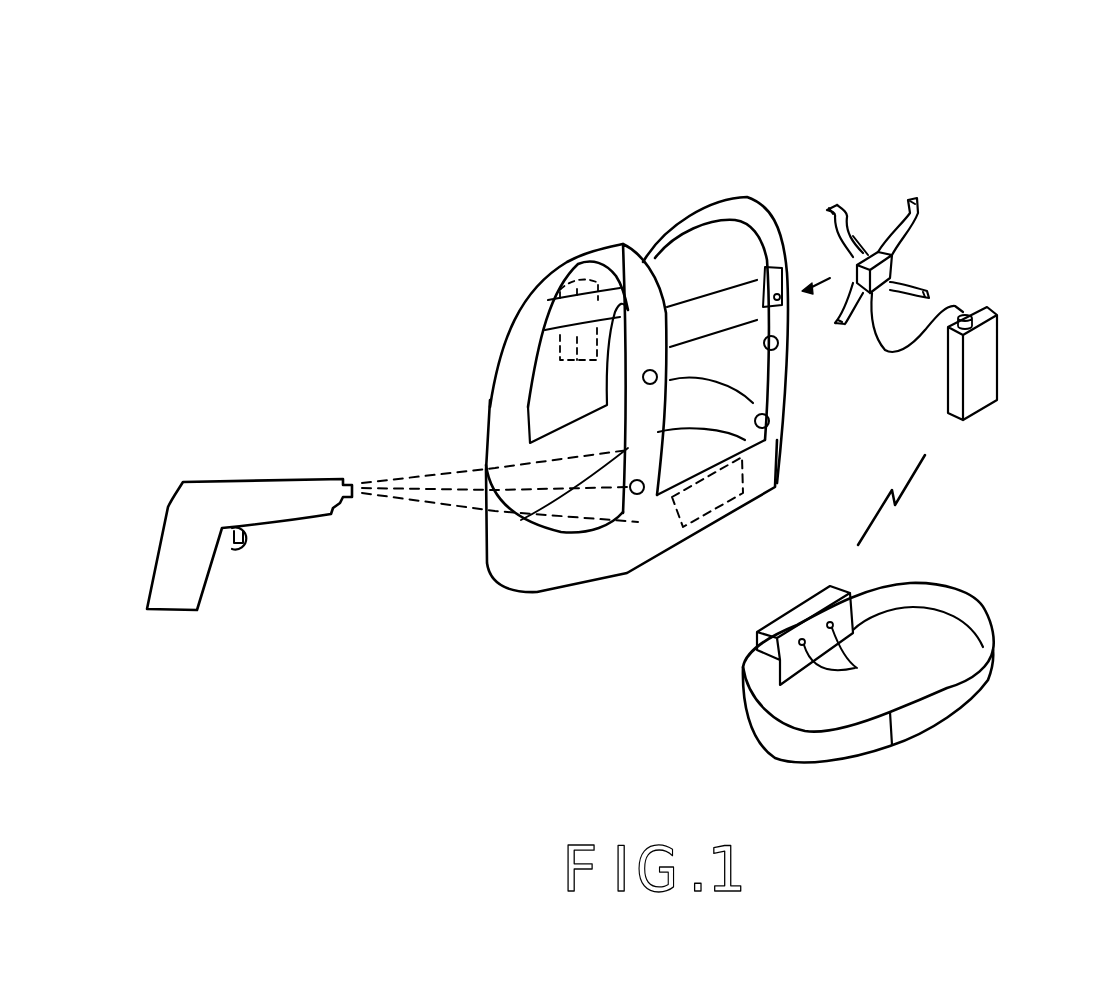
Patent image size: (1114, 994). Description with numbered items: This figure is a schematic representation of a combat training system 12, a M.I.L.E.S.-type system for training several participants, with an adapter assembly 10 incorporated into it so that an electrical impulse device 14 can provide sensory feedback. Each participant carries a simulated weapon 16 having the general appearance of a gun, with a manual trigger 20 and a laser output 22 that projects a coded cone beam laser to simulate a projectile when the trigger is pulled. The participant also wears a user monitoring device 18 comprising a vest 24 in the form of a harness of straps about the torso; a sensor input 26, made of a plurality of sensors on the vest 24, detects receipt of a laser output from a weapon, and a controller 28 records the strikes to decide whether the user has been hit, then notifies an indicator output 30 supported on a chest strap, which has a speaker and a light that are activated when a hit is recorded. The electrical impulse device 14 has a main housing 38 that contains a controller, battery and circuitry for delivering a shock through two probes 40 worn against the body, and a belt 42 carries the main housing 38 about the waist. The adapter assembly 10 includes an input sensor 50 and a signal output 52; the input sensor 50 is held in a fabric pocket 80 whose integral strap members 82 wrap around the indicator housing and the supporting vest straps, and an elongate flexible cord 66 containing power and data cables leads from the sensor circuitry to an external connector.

The adapter assembly 10 is at (913, 106).
The combat training system 12 is at (351, 171).
The electrical impulse device 14 is at (819, 667).
The simulated weapon 16 is at (392, 504).
The user monitoring device 18 is at (621, 531).
The manual trigger 20 is at (228, 547).
The laser output 22 is at (350, 483).
The vest 24 is at (513, 330).
The sensor input 26 is at (778, 347).
The controller 28 is at (690, 530).
The indicator output 30 is at (773, 285).
The main housing 38 is at (779, 633).
The probes 40 is at (846, 651).
The belt 42 is at (965, 603).
The input sensor 50 is at (967, 342).
The signal output 52 is at (1018, 332).
The elongate flexible cord 66 is at (884, 346).
The fabric pocket 80 is at (892, 263).
The strap members 82 is at (879, 252).